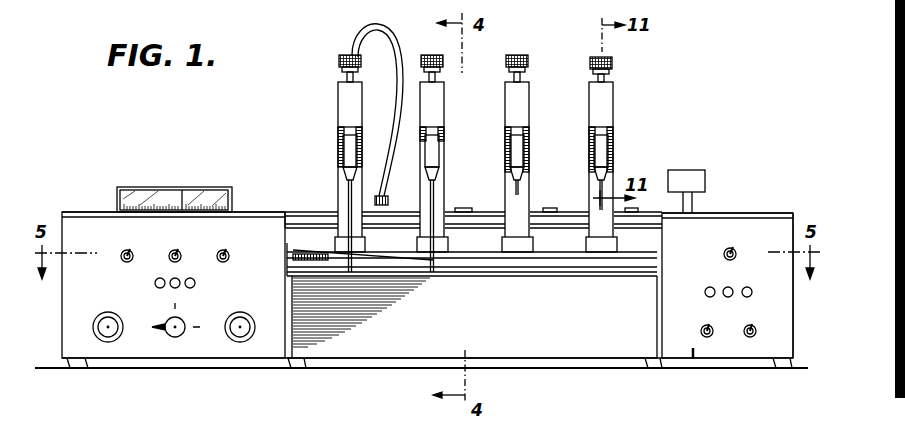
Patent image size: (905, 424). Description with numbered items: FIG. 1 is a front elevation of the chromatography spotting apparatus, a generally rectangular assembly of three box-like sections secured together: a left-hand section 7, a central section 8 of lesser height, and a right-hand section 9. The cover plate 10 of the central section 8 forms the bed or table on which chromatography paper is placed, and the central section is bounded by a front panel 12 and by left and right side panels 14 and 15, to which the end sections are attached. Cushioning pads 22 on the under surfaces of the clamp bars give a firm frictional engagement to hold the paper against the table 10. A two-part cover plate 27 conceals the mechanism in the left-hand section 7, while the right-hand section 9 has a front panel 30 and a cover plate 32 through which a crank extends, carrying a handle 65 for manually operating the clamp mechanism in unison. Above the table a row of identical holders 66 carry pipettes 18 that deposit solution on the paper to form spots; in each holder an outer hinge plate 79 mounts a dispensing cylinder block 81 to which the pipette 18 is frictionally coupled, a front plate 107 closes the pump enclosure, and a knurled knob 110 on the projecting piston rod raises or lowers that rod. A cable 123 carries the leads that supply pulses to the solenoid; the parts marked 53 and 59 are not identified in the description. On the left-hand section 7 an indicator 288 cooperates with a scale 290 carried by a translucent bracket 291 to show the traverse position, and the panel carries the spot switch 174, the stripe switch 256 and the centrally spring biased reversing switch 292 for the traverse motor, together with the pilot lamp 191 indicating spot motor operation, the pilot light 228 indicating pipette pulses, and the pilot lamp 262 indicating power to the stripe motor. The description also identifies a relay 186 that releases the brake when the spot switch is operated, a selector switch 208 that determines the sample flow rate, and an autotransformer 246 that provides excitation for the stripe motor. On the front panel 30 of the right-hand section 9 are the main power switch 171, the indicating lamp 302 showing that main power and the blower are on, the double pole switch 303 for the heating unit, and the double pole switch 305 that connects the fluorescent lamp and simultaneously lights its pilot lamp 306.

The left-hand section 7 is at (65, 200).
The central section 8 is at (546, 298).
The right-hand section 9 is at (738, 200).
The cover plate 10 is at (478, 276).
The front panel 12 is at (506, 352).
The left side panel 14 is at (305, 333).
The right side panel 15 is at (660, 332).
The pipette 18 is at (347, 192).
The cushioning pad 22 is at (693, 360).
The cover plate 27 is at (244, 210).
The front panel 30 is at (793, 340).
The cover plate 32 is at (791, 212).
The tube connector 53 is at (381, 206).
The stand stem 59 is at (693, 200).
The handle 65 is at (690, 170).
The holder 66 is at (330, 97).
The outer hinge plate 79 is at (598, 148).
The dispensing cylinder block 81 is at (508, 145).
The front plate 107 is at (526, 97).
The knurled knob 110 is at (338, 61).
The cable 123 is at (360, 28).
The main power switch 171 is at (735, 252).
The spot switch 174 is at (123, 250).
The relay 186 is at (108, 341).
The pilot lamp 191 is at (155, 283).
The selector switch 208 is at (175, 338).
The pilot light 228 is at (172, 289).
The autotransformer 246 is at (243, 342).
The stripe switch 256 is at (168, 256).
The pilot lamp 262 is at (196, 283).
The indicator 288 is at (183, 194).
The scale 290 is at (132, 196).
The bracket 291 is at (151, 193).
The reversing switch 292 is at (230, 256).
The indicating lamp 302 is at (748, 288).
The double pole switch 303 is at (746, 337).
The double pole switch 305 is at (702, 333).
The pilot lamp 306 is at (706, 290).